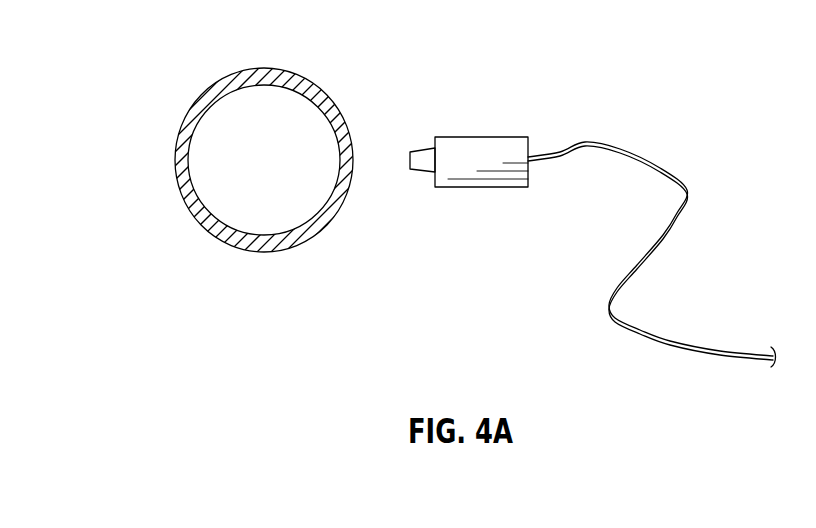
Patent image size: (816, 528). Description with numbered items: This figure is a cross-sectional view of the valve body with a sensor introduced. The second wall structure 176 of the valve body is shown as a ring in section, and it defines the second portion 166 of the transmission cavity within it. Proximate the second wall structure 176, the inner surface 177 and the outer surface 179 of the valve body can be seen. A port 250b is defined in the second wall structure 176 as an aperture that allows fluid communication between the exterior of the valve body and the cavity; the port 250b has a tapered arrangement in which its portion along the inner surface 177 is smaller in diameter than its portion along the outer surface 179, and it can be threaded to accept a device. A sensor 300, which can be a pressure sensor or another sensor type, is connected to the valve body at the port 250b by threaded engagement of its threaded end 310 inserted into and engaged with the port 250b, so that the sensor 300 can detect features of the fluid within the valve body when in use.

The outer surface 179 is at (205, 82).
The inner surface 177 is at (260, 93).
The second wall structure 176 is at (250, 243).
The second portion 166 is at (213, 173).
The port 250b is at (373, 157).
The sensor 300 is at (497, 137).
The threaded end 310 is at (423, 172).